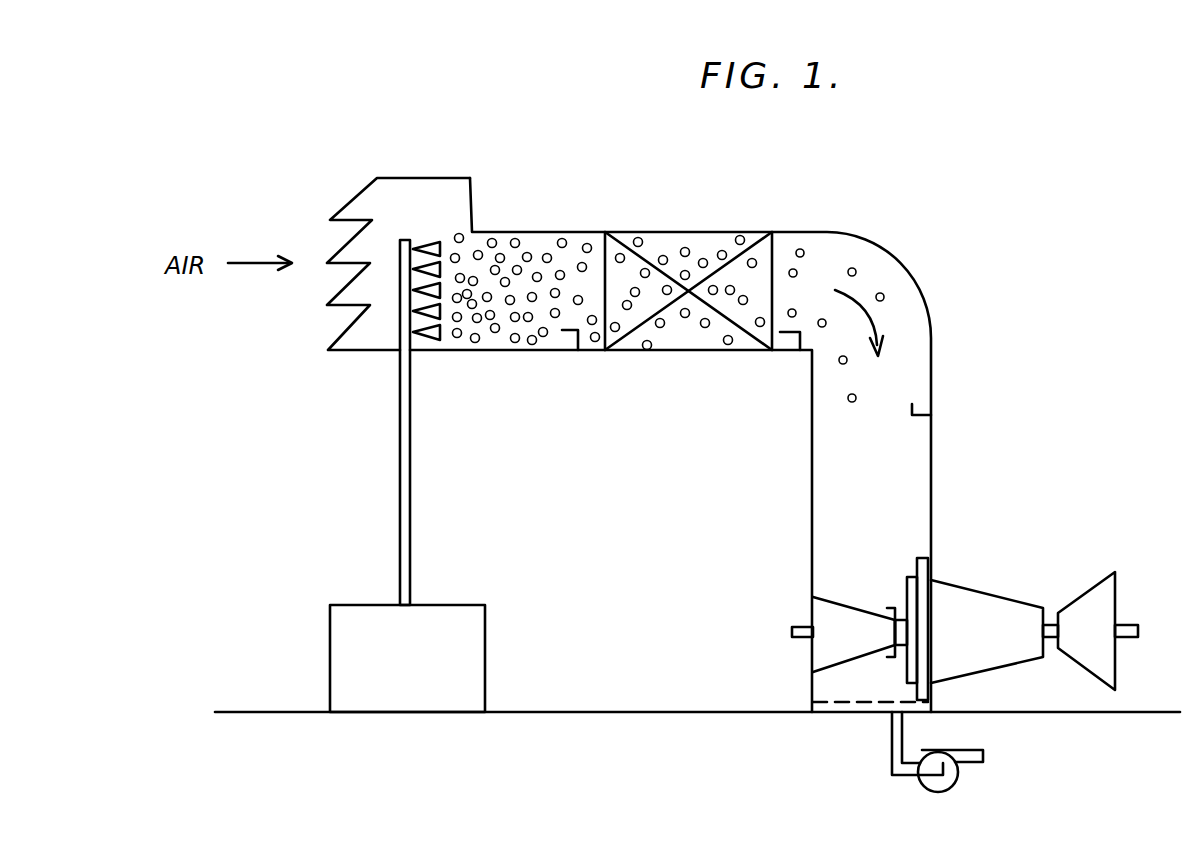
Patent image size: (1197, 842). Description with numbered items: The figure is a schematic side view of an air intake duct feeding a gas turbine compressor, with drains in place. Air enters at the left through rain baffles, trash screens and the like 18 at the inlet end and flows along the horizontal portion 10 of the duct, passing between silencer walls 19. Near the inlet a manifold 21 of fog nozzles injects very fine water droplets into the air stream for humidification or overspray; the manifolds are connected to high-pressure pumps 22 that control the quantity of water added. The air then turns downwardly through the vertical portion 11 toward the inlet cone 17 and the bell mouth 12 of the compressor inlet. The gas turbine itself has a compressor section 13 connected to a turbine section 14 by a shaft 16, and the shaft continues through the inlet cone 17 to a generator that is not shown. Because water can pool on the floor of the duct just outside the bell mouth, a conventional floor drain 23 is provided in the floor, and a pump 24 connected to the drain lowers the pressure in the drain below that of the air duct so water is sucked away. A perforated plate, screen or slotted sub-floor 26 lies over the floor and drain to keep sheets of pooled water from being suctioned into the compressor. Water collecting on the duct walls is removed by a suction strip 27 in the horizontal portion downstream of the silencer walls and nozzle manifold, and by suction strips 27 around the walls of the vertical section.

The horizontal portion 10 is at (565, 232).
The vertical portion 11 is at (812, 470).
The bell mouth 12 is at (893, 588).
The compressor section 13 is at (1007, 596).
The turbine section 14 is at (1108, 565).
The shaft 16 is at (1053, 640).
The inlet cone 17 is at (835, 598).
The rain baffles, trash screens, and the like 18 is at (348, 193).
The silencer walls 19 is at (703, 240).
The manifold of fog nozzles 21 is at (432, 240).
The high-pressure pumps 22 is at (462, 605).
The floor drain 23 is at (885, 745).
The pump 24 is at (957, 778).
The slotted sub-floor 26 is at (845, 702).
The suction strip 27 is at (585, 352).